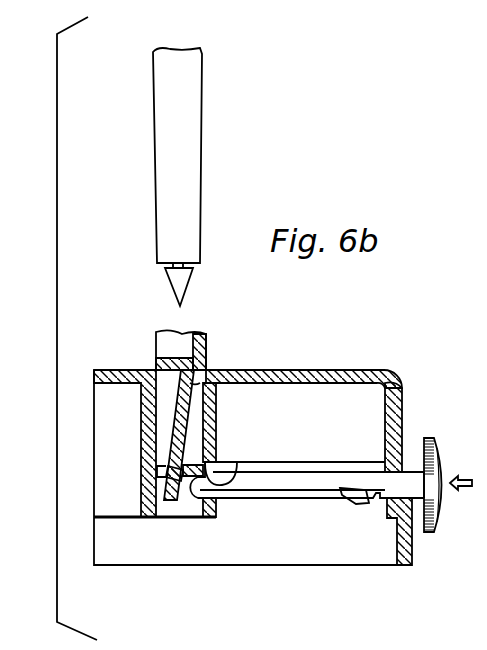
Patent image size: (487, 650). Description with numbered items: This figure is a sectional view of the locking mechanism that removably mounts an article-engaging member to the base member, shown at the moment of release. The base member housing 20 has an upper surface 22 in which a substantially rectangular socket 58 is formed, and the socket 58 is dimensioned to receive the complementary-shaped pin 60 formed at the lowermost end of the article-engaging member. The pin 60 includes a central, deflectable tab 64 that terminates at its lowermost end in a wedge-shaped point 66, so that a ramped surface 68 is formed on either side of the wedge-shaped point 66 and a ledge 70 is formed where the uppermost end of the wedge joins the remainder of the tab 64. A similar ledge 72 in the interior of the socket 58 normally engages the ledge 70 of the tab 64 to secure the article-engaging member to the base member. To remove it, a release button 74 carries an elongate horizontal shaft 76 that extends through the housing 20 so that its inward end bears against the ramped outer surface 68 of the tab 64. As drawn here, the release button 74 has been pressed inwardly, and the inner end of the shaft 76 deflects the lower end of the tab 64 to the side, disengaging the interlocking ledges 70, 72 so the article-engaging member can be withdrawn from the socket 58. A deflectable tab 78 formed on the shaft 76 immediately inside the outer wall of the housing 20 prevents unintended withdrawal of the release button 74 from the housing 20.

The base member housing 20 is at (385, 370).
The upper surface 22 is at (270, 369).
The socket 58 is at (197, 362).
The pin 60 is at (196, 162).
The deflectable tab 64 is at (178, 404).
The wedge-shaped point 66 is at (168, 503).
The ramped surface 68 is at (166, 483).
The ledge 70 is at (186, 466).
The ledge 72 is at (222, 478).
The release button 74 is at (428, 438).
The horizontal shaft 76 is at (328, 465).
The deflectable tab 78 is at (358, 507).